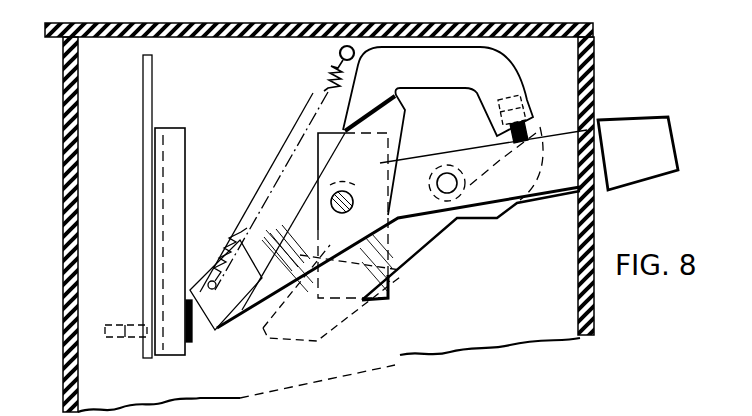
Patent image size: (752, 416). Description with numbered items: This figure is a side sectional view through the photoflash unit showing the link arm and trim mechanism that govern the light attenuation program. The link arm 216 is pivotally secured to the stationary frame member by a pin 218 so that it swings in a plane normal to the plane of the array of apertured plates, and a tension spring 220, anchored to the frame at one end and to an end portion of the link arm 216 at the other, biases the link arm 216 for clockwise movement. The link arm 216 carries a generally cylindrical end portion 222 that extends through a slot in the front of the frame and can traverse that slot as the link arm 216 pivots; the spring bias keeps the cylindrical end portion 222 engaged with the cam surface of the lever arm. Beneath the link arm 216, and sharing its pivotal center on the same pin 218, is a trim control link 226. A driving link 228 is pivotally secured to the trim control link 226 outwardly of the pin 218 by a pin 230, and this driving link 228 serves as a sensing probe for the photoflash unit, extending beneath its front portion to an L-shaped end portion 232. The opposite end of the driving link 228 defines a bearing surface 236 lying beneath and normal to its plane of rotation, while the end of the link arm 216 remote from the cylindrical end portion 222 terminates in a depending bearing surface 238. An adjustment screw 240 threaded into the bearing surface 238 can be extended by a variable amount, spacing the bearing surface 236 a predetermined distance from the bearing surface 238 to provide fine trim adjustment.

The link arm 216 is at (314, 241).
The pin 218 is at (358, 190).
The tension spring 220 is at (322, 70).
The cylindrical end portion 222 is at (124, 342).
The trim control link 226 is at (665, 133).
The driving link 228 is at (412, 270).
The pin 230 is at (452, 193).
The end portion 232 is at (318, 341).
The bearing surface 236 is at (540, 127).
The bearing surface 238 is at (492, 124).
The adjustment screw 240 is at (522, 122).